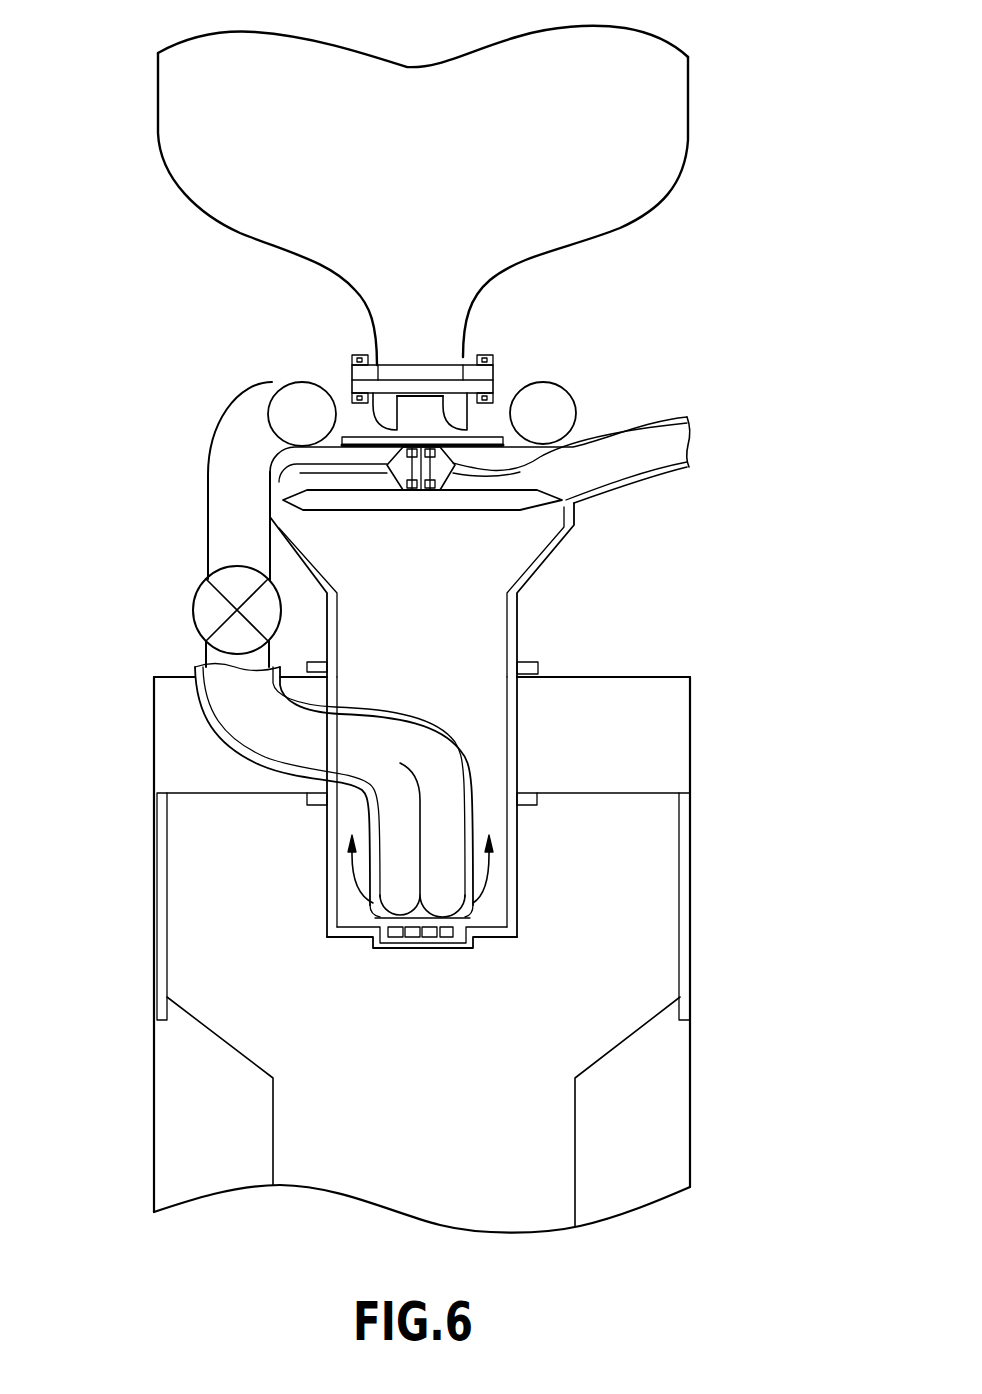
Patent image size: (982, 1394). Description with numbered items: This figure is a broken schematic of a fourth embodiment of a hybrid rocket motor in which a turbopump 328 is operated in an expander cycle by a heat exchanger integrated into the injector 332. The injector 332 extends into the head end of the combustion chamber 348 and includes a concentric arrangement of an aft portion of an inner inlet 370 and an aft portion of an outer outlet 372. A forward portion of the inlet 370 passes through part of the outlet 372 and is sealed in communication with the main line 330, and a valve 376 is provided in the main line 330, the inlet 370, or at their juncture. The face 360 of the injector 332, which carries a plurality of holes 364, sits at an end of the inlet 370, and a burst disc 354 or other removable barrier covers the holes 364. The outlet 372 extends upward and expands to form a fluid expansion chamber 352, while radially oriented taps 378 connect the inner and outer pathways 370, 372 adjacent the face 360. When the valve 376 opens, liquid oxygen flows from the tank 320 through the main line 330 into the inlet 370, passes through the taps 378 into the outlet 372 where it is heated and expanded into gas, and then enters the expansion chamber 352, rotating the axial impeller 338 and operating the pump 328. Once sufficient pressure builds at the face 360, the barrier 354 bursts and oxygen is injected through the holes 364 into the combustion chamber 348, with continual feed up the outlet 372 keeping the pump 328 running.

The tank 320 is at (689, 98).
The turbopump 328 is at (468, 433).
The main line 330 is at (212, 518).
The injector 332 is at (325, 860).
The axial impeller 338 is at (498, 505).
The combustion chamber 348 is at (431, 1141).
The fluid expansion chamber 352 is at (520, 560).
The burst disc 354 is at (397, 948).
The face 360 is at (482, 940).
The holes 364 is at (425, 947).
The inner inlet 370 is at (450, 800).
The outer outlet 372 is at (497, 870).
The valve 376 is at (196, 608).
The taps 378 is at (370, 917).